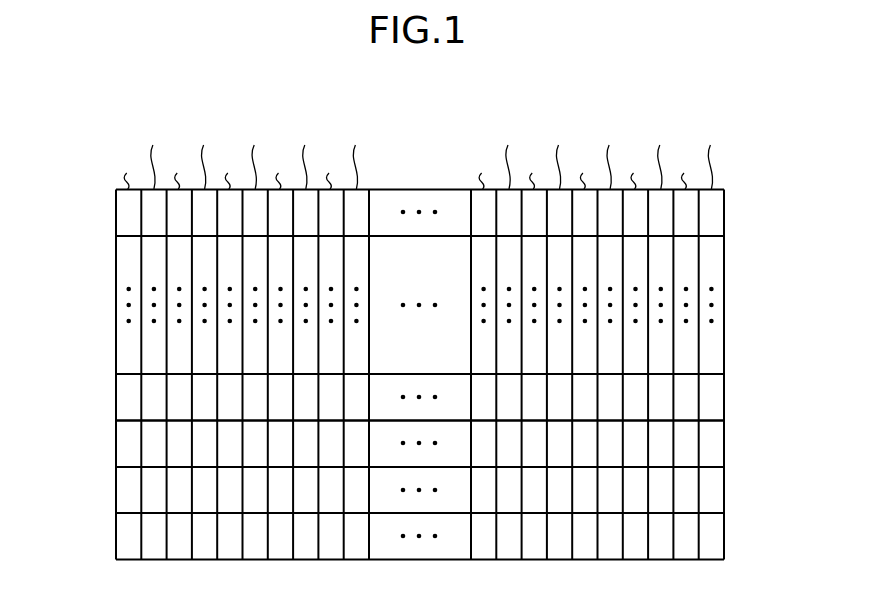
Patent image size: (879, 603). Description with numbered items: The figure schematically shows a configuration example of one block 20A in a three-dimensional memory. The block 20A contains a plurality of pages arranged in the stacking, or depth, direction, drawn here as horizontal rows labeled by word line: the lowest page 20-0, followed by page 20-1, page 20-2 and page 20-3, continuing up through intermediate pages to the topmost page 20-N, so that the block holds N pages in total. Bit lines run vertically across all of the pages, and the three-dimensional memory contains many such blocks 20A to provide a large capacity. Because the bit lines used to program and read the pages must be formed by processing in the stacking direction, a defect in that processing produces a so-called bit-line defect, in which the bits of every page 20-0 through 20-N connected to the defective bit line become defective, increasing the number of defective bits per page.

The block 20A is at (61, 141).
The page 20-N is at (734, 211).
The page 20-3 is at (734, 396).
The page 20-2 is at (734, 442).
The page 20-1 is at (734, 489).
The page 20-0 is at (734, 535).